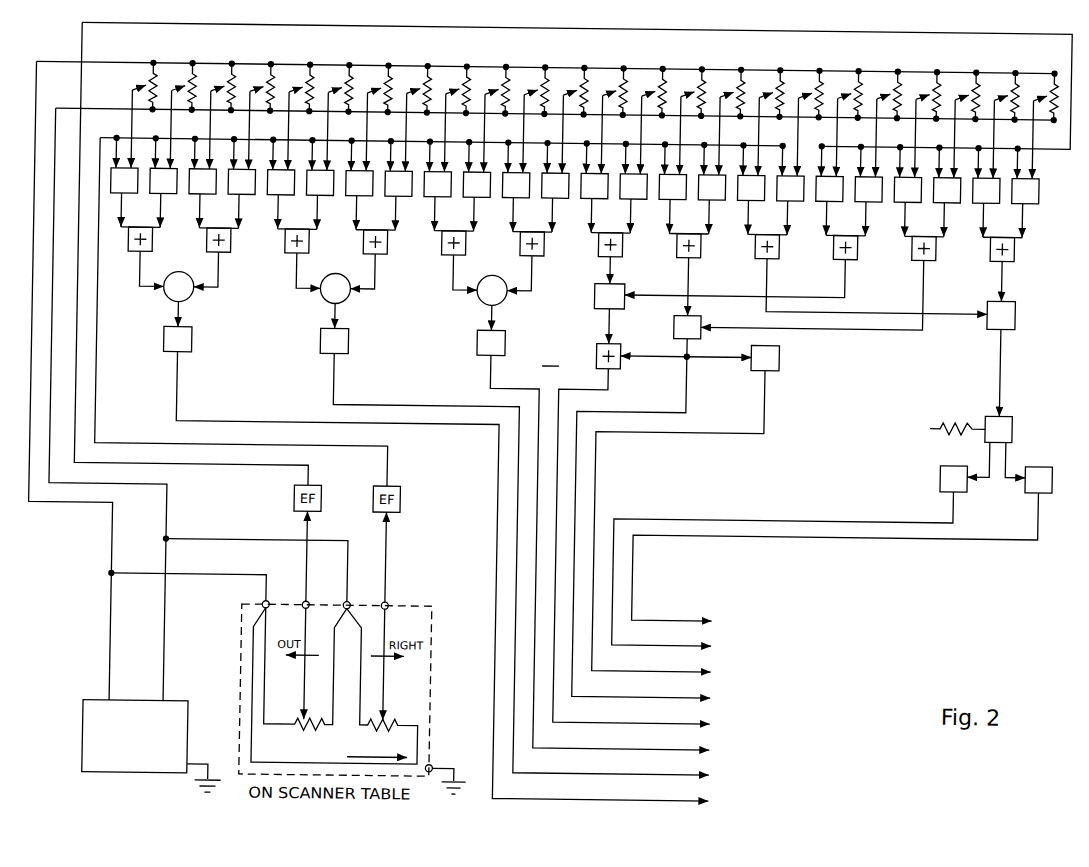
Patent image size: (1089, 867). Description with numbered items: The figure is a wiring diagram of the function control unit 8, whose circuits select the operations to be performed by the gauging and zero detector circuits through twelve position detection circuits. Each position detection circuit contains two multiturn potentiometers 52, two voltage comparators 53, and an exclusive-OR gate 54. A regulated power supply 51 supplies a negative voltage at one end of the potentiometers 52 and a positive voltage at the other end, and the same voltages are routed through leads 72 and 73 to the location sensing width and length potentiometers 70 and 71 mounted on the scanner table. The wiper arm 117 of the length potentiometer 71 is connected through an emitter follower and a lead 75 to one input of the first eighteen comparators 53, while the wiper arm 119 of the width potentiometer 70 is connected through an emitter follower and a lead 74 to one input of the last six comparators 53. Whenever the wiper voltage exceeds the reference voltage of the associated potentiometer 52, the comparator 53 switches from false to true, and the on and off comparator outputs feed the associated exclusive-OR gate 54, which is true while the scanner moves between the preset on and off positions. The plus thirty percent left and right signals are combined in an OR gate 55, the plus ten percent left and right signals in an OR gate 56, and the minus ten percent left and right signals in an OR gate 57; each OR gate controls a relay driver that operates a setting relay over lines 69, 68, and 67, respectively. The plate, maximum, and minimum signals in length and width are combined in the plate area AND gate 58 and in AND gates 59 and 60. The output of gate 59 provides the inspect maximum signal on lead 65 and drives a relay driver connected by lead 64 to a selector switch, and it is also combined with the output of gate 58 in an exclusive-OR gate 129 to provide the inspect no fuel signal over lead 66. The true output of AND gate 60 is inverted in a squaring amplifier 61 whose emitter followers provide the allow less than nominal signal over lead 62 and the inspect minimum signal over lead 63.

The function control unit 8 is at (658, 504).
The regulated power supply 51 is at (193, 708).
The potentiometers 52 is at (185, 101).
The voltage comparators 53 is at (146, 198).
The exclusive-OR gate 54 is at (203, 256).
The OR gate 55 is at (165, 302).
The OR gate 56 is at (322, 302).
The OR gate 57 is at (478, 302).
The plate area AND gate 58 is at (592, 308).
The AND gate 59 is at (672, 322).
The AND gate 60 is at (1013, 300).
The squaring amplifier 61 is at (1012, 413).
The lead 62 is at (650, 619).
The lead 63 is at (650, 644).
The lead 64 is at (650, 670).
The lead 65 is at (650, 696).
The lead 66 is at (650, 722).
The line 67 is at (650, 748).
The line 68 is at (650, 773).
The line 69 is at (650, 799).
The width potentiometer 70 is at (305, 722).
The length potentiometer 71 is at (395, 722).
The lead 72 is at (232, 578).
The lead 73 is at (203, 542).
The lead 74 is at (216, 468).
The lead 75 is at (338, 448).
The wiper arm 117 is at (388, 677).
The wiper arm 119 is at (309, 677).
The exclusive-OR gate 129 is at (619, 368).